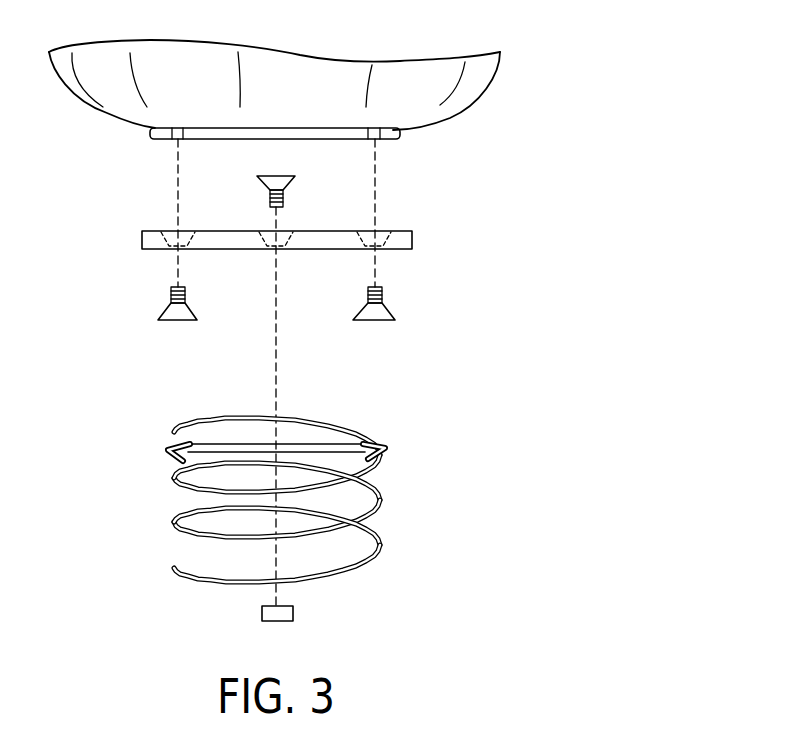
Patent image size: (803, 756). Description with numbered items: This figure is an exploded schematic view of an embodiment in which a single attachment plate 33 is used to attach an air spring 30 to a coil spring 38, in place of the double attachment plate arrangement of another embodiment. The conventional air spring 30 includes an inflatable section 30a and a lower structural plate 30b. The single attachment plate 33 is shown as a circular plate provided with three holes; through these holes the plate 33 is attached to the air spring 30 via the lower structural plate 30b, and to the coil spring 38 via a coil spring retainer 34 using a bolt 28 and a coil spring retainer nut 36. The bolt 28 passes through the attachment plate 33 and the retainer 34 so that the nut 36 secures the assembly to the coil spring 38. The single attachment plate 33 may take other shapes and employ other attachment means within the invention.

The bolt 28 is at (287, 196).
The air spring 30 is at (275, 84).
The inflatable section 30a is at (387, 80).
The lower structural plate 30b is at (153, 131).
The single attachment plate 33 is at (142, 237).
The coil spring retainer 34 is at (218, 443).
The coil spring retainer nut 36 is at (293, 612).
The coil spring 38 is at (370, 480).